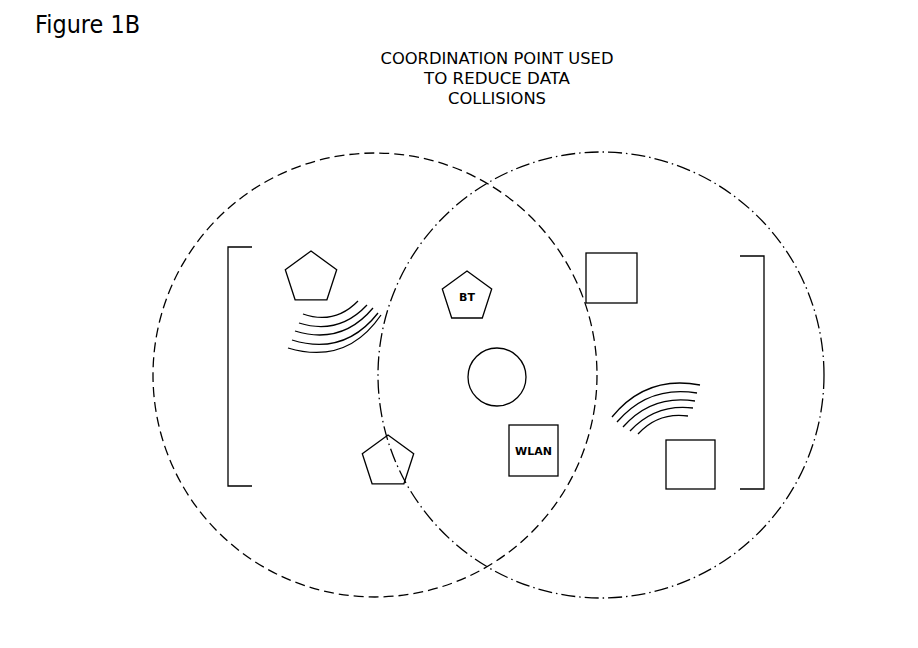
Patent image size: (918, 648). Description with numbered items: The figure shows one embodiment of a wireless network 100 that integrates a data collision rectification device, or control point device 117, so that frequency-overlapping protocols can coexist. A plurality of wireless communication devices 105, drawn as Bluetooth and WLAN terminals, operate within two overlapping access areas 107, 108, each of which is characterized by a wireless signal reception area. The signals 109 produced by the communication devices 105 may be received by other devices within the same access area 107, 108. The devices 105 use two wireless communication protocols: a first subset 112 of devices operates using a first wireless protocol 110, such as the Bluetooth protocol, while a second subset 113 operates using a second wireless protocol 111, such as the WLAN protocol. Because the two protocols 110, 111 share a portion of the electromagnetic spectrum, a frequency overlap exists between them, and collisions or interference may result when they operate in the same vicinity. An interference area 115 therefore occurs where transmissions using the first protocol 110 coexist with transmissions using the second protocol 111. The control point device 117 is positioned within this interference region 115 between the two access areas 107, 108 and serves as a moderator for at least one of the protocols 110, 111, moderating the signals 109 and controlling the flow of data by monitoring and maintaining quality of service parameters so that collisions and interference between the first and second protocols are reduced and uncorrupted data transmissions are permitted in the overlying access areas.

The wireless network 100 is at (713, 153).
The wireless communication devices 105 is at (354, 470).
The access area 107 is at (218, 525).
The access area 108 is at (768, 232).
The signals 109 is at (287, 330).
The first wireless protocol 110 is at (329, 265).
The second wireless protocol 111 is at (670, 477).
The first subset 112 is at (228, 373).
The second subset 113 is at (764, 378).
The interference area 115 is at (494, 548).
The control point device 117 is at (530, 380).